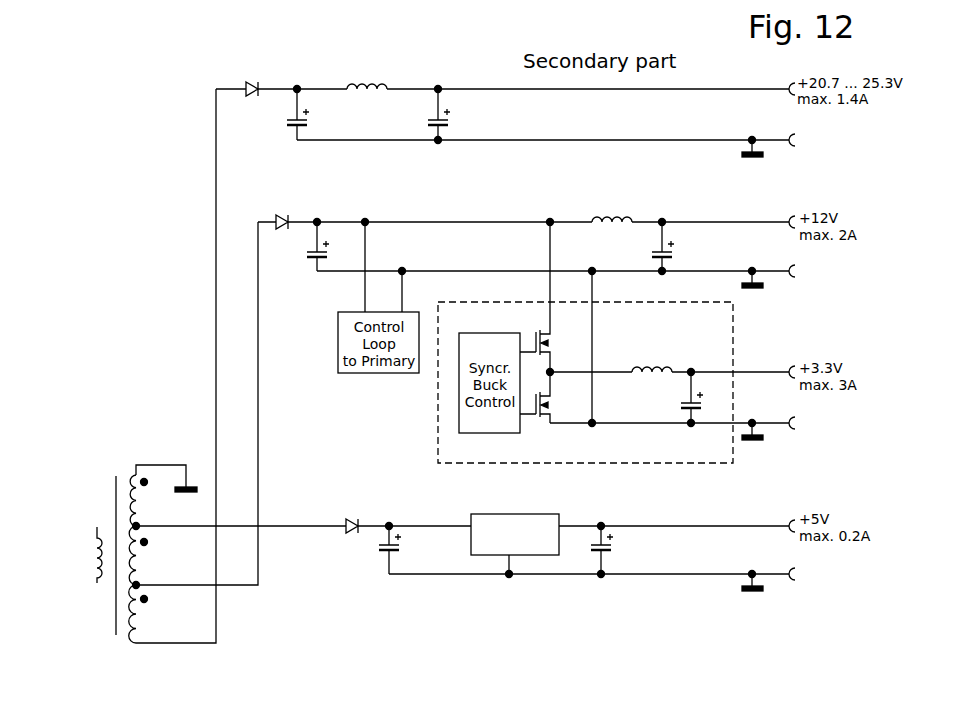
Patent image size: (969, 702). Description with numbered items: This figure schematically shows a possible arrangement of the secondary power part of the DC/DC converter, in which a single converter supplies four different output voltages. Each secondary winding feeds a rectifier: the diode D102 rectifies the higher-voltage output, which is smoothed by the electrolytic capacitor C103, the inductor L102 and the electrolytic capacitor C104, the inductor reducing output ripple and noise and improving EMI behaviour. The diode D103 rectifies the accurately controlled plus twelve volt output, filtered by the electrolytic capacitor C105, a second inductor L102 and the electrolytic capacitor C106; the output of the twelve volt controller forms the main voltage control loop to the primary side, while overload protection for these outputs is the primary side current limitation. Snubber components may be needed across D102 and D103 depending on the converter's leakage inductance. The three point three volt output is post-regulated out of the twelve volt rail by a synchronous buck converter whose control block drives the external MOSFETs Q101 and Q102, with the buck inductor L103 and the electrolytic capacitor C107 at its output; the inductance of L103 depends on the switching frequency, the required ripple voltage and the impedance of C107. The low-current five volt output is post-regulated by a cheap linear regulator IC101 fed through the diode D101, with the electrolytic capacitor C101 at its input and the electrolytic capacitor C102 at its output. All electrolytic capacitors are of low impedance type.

The diode D101 is at (361, 515).
The diode D102 is at (259, 78).
The diode D103 is at (291, 211).
The inductor L102 is at (490, 141).
The inductor L103 is at (652, 357).
The electrolytic capacitor C101 is at (412, 550).
The electrolytic capacitor C102 is at (624, 550).
The electrolytic capacitor C103 is at (318, 114).
The electrolytic capacitor C104 is at (459, 114).
The electrolytic capacitor C105 is at (338, 246).
The electrolytic capacitor C106 is at (683, 246).
The electrolytic capacitor C107 is at (670, 397).
The MOSFET Q101 is at (556, 297).
The MOSFET Q102 is at (556, 397).
The linear regulator IC101 is at (515, 534).